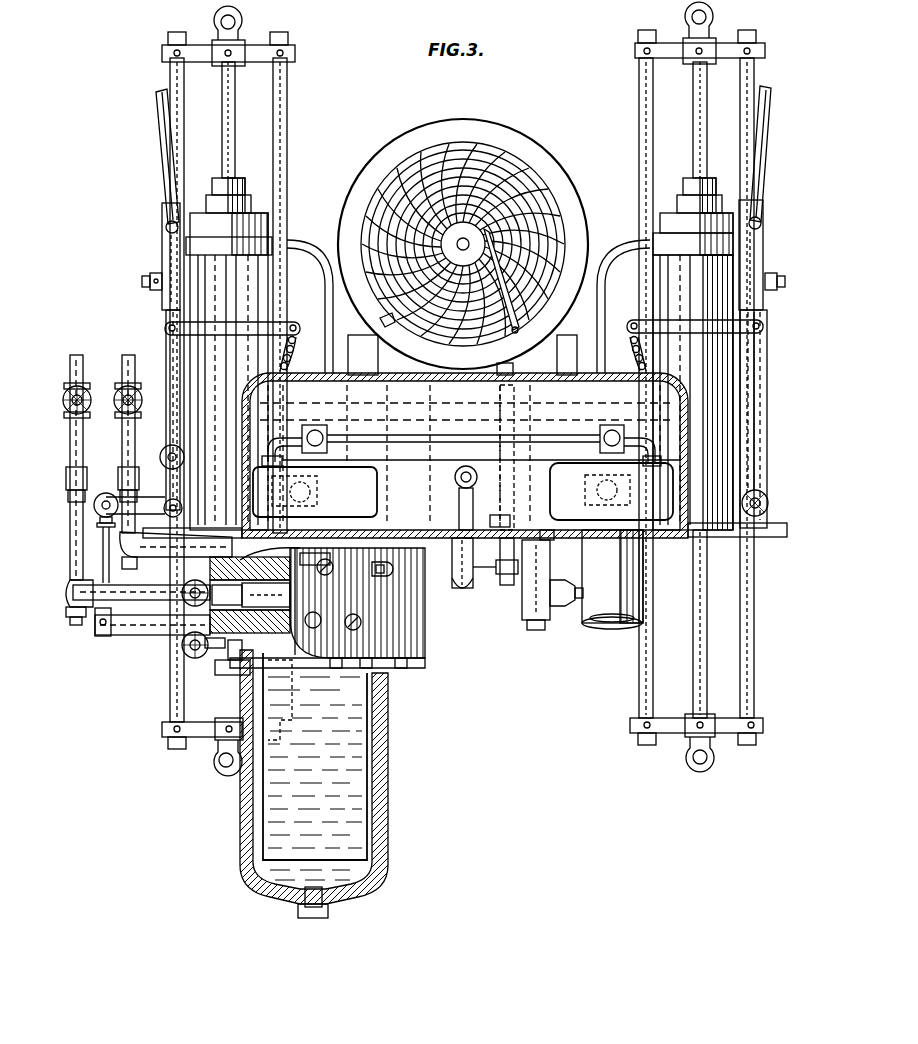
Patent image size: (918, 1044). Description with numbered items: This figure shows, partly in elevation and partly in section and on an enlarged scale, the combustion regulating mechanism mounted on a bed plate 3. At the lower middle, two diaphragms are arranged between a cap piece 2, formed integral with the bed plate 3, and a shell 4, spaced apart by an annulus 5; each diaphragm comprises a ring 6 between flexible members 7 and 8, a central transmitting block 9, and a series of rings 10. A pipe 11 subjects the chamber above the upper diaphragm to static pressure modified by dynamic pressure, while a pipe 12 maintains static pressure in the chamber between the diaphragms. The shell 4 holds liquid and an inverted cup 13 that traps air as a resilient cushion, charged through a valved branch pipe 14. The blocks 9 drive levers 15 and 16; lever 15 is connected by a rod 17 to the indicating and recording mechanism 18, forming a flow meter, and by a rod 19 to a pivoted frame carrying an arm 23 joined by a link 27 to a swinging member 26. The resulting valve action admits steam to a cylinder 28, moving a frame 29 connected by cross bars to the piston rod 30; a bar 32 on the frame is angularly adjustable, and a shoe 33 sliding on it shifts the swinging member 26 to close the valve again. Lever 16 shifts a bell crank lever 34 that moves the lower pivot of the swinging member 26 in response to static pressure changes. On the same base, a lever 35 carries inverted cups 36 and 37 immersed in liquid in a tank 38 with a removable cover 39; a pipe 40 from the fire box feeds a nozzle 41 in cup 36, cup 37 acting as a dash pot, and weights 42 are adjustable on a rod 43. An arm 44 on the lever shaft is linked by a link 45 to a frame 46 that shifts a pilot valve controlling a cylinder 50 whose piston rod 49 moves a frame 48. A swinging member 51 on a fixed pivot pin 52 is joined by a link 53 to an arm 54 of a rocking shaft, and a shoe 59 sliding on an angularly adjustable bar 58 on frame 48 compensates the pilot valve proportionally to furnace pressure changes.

The cap piece 2 is at (405, 548).
The bed plate 3 is at (510, 585).
The shell 4 is at (388, 726).
The annulus 5 is at (415, 592).
The ring 6 is at (212, 573).
The flexible member 7 is at (318, 560).
The flexible member 8 is at (426, 646).
The central transmitting block 9 is at (274, 595).
The rings 10 is at (234, 660).
The pipe 11 is at (122, 437).
The pipe 12 is at (70, 436).
The inverted cup 13 is at (362, 808).
The valved branch pipe 14 is at (190, 608).
The lever 15 is at (476, 590).
The lever 16 is at (118, 645).
The rod 17 is at (522, 575).
The indicating and recording mechanism 18 is at (578, 220).
The rod 19 is at (448, 503).
The arm 23 is at (300, 338).
The swinging member 26 is at (165, 330).
The link 27 is at (226, 336).
The cylinder 28 is at (229, 371).
The frame 29 is at (287, 156).
The piston rod 30 is at (224, 146).
The bar 32 is at (158, 148).
The shoe 33 is at (162, 212).
The bell crank lever 34 is at (143, 500).
The lever 35 is at (595, 491).
The inverted cup 36 is at (548, 532).
The inverted cup 37 is at (366, 493).
The tank 38 is at (690, 444).
The removable cover 39 is at (363, 374).
The pipe or tube 40 is at (582, 622).
The nozzle 41 is at (552, 498).
The weights 42 is at (332, 430).
The rod 43 is at (400, 435).
The arm 44 is at (480, 487).
The link 45 is at (500, 420).
The frame 46 is at (555, 376).
The frame 48 is at (640, 117).
The piston rod 49 is at (693, 134).
The cylinder 50 is at (693, 371).
The swinging member 51 is at (767, 388).
The fixed pivot pin 52 is at (769, 505).
The link 53 is at (689, 334).
The arm 54 is at (628, 338).
The bar 58 is at (761, 162).
The shoe 59 is at (737, 198).